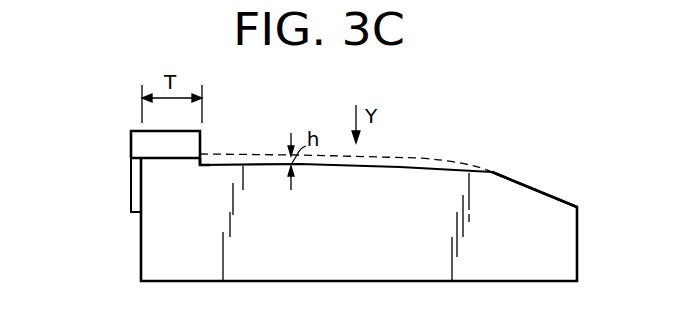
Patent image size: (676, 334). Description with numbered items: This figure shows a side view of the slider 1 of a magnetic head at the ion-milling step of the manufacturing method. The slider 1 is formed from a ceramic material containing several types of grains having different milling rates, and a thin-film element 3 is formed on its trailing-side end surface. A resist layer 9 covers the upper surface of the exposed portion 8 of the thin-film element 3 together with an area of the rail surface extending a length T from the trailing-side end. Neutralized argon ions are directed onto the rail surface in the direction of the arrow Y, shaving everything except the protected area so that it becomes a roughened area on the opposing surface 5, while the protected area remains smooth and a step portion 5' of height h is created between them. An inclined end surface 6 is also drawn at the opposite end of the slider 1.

The slider 1 is at (490, 262).
The thin-film element 3 is at (130, 178).
The opposing surface 5 is at (346, 138).
The step portion 5' is at (346, 138).
The inclined end surface 6 is at (531, 187).
The exposed portion 8 is at (137, 156).
The resist layer 9 is at (200, 148).